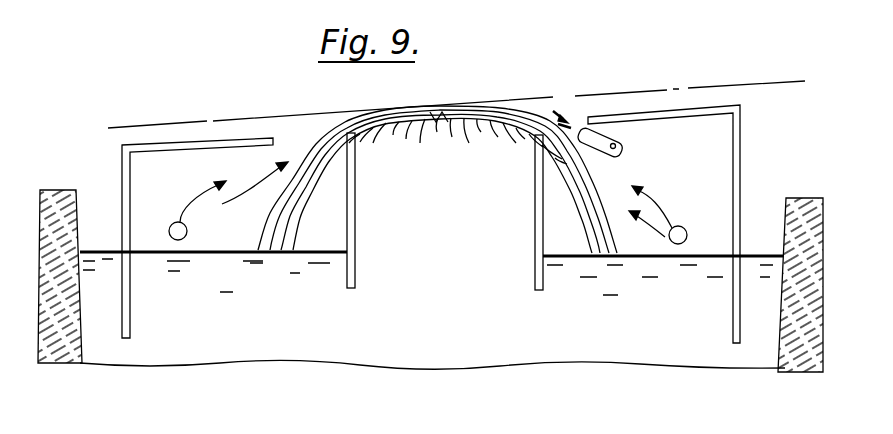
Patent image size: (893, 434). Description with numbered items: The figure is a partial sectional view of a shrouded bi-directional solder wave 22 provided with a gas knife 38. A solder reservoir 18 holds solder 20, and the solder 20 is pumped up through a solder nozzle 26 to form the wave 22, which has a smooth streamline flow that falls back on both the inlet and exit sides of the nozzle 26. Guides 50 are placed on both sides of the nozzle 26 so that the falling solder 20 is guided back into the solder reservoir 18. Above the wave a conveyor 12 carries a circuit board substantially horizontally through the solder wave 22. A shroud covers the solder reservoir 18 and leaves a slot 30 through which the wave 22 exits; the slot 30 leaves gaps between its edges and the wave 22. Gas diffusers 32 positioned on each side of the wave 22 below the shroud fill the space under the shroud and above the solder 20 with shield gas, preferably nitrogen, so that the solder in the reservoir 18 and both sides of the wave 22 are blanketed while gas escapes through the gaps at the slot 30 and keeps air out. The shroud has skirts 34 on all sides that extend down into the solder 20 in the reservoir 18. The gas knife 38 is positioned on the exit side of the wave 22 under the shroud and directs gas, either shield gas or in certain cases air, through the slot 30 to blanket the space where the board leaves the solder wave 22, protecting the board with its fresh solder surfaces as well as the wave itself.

The conveyor 12 is at (232, 118).
The solder reservoir 18 is at (786, 350).
The solder 20 is at (383, 352).
The solder wave 22 is at (492, 107).
The solder nozzle 26 is at (348, 268).
The slot 30 is at (295, 146).
The gas diffuser 32 is at (190, 230).
The skirt 34 is at (130, 313).
The gas knife 38 is at (620, 134).
The guide 50 is at (434, 224).